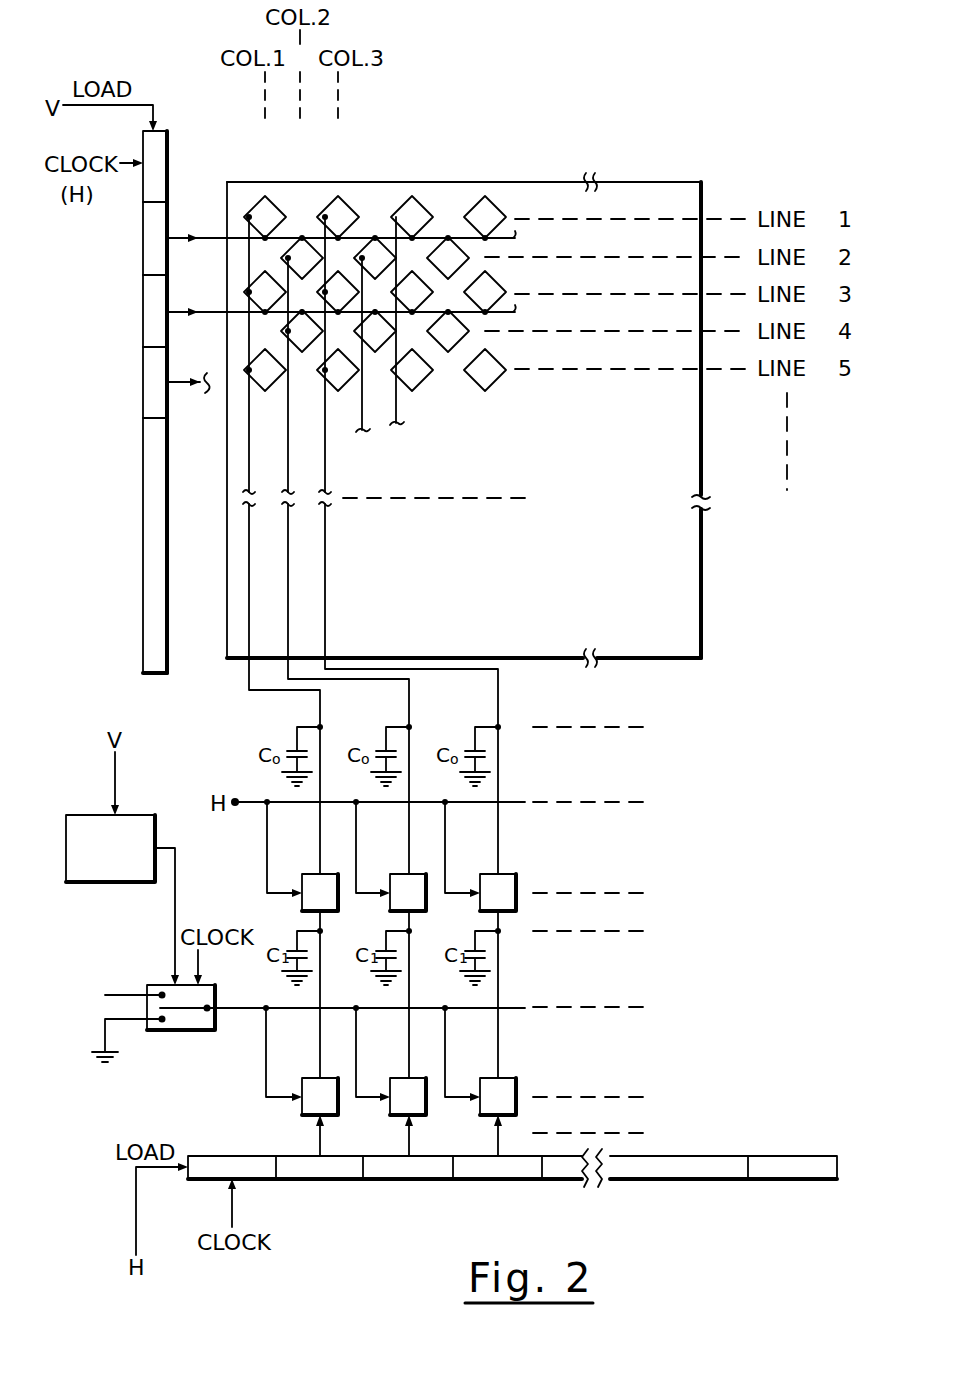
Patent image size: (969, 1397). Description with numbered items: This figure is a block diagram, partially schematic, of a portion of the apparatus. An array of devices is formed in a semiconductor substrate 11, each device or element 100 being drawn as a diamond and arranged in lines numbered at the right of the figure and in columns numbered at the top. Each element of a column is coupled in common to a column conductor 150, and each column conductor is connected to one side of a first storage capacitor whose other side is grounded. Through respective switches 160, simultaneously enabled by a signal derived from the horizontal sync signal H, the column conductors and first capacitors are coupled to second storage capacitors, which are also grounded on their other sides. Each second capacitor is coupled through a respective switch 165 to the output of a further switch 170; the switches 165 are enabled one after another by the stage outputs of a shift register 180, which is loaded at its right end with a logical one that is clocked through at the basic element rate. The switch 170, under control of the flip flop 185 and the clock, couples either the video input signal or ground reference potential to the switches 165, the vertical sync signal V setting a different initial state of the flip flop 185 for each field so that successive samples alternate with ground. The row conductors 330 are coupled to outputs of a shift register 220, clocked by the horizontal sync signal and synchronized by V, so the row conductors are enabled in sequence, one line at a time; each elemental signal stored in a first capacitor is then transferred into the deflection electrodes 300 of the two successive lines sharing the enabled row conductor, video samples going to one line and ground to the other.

The semiconductor substrate 11 is at (490, 186).
The element 100 is at (357, 403).
The deflection electrode 300 is at (258, 200).
The row conductor 330 is at (210, 238).
The shift register 220 is at (147, 616).
The column conductor 150 is at (285, 691).
The switch 160 is at (312, 874).
The switch 165 is at (312, 1074).
The switch 170 is at (195, 1031).
The flip flop 185 is at (83, 815).
The shift register 180 is at (689, 1179).